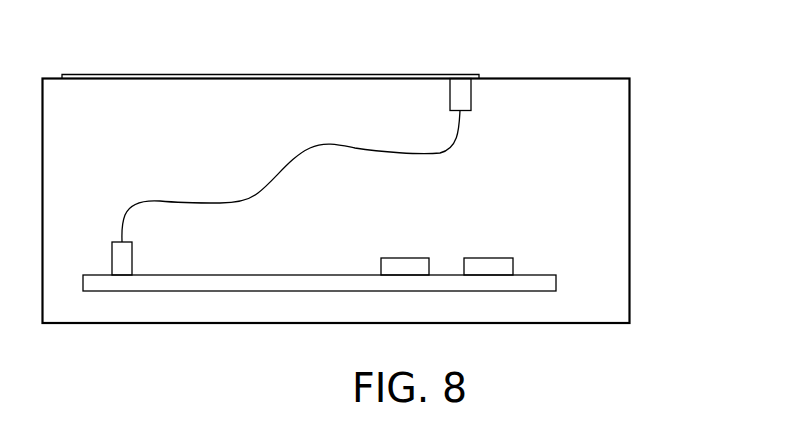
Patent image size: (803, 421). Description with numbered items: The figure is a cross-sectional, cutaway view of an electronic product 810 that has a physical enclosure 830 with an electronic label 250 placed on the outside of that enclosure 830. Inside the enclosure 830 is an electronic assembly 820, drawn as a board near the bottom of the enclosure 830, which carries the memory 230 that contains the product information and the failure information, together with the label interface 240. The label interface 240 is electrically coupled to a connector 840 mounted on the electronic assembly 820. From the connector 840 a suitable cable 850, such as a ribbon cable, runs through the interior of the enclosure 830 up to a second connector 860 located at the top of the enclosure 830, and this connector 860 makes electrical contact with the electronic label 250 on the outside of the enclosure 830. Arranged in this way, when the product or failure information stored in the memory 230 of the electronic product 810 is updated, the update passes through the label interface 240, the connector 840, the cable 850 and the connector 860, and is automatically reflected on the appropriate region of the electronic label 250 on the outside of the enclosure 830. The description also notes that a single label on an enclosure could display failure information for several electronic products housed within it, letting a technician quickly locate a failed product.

The electronic product 810 is at (674, 66).
The electronic assembly 820 is at (566, 190).
The enclosure 830 is at (630, 200).
The connector 840 is at (132, 259).
The flexible cable 850 is at (255, 193).
The connector 860 is at (450, 96).
The electronic label 250 is at (213, 75).
The label interface 240 is at (407, 258).
The memory 230 is at (490, 258).